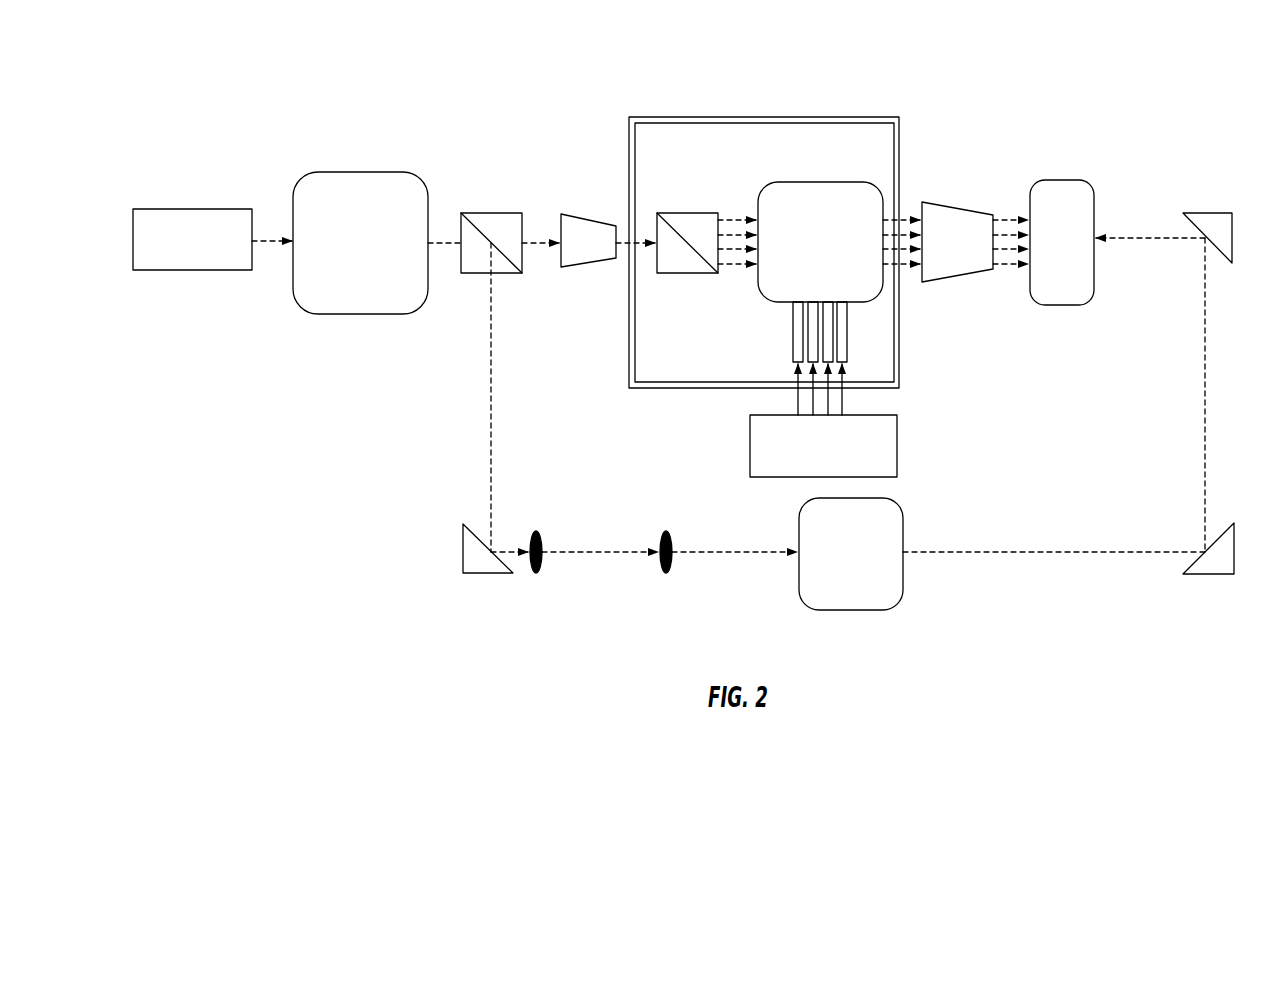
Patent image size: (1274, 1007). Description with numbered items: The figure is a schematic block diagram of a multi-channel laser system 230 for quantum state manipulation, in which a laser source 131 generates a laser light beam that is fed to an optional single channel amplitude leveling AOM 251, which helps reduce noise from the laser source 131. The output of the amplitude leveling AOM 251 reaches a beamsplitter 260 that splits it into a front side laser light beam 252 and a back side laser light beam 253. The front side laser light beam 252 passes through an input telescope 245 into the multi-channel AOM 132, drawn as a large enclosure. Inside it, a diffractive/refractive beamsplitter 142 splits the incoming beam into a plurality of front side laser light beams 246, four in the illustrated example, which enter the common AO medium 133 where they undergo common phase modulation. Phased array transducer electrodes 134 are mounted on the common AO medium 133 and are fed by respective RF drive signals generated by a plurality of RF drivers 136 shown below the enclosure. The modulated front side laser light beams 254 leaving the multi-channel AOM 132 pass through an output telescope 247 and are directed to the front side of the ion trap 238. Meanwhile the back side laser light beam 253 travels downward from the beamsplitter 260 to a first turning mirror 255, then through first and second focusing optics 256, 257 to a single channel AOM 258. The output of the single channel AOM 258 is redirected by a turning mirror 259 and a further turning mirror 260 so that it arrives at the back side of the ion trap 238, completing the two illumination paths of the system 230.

The multi-channel laser system 230 is at (1080, 58).
The laser source 131 is at (160, 210).
The single channel amplitude leveling AOM 251 is at (323, 172).
The front side laser light beam 252 is at (531, 240).
The beamsplitter / turning mirror 260 is at (470, 212).
The input telescope 245 is at (588, 214).
The multi-channel AOM 132 is at (899, 118).
The diffractive/refractive beamsplitter 142 is at (675, 273).
The front side laser light beams 246 is at (736, 264).
The common AO medium 133 is at (875, 187).
The modulated front side laser light beams 254 is at (898, 268).
The output telescope 247 is at (960, 207).
The ion trap 238 is at (1093, 182).
The phased array transducer electrodes 134 is at (850, 356).
The RF drivers 136 is at (897, 437).
The back side laser light beam 253 is at (490, 383).
The first turning mirror 255 is at (487, 575).
The first focusing optics 256 is at (537, 530).
The second focusing optics 257 is at (668, 530).
The single channel AOM 258 is at (900, 601).
The turning mirror 259 is at (1213, 575).